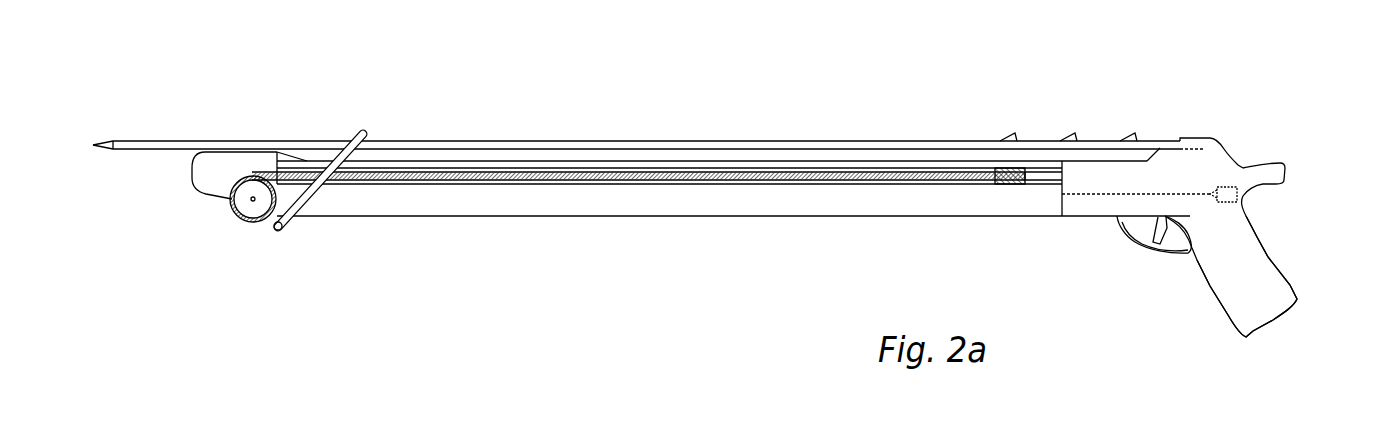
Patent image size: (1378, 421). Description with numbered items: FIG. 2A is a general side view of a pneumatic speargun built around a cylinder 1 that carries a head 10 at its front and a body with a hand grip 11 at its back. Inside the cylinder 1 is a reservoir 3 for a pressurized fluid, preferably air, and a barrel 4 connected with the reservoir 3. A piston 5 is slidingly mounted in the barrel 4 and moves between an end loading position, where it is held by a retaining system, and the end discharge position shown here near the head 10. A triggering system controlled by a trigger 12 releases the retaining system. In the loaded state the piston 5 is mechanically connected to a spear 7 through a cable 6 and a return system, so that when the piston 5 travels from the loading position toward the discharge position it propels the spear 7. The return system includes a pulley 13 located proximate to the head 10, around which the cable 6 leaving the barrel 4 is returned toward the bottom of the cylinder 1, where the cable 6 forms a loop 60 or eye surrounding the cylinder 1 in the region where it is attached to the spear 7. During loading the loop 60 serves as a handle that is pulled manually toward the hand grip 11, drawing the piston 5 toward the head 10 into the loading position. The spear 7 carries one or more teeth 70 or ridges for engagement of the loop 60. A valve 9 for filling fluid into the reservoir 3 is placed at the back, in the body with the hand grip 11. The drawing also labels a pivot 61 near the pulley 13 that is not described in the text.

The cylinder 1 is at (621, 162).
The reservoir 3 is at (1043, 207).
The barrel 4 is at (1040, 170).
The piston 5 is at (993, 185).
The cable 6 is at (692, 187).
The spear 7 is at (752, 140).
The valve 9 is at (1238, 183).
The head 10 is at (234, 165).
The hand grip 11 is at (1247, 260).
The trigger 12 is at (1159, 242).
The pulley 13 is at (247, 210).
The loop 60 is at (365, 131).
The lever pivot 61 is at (280, 232).
The teeth 70 is at (1128, 140).